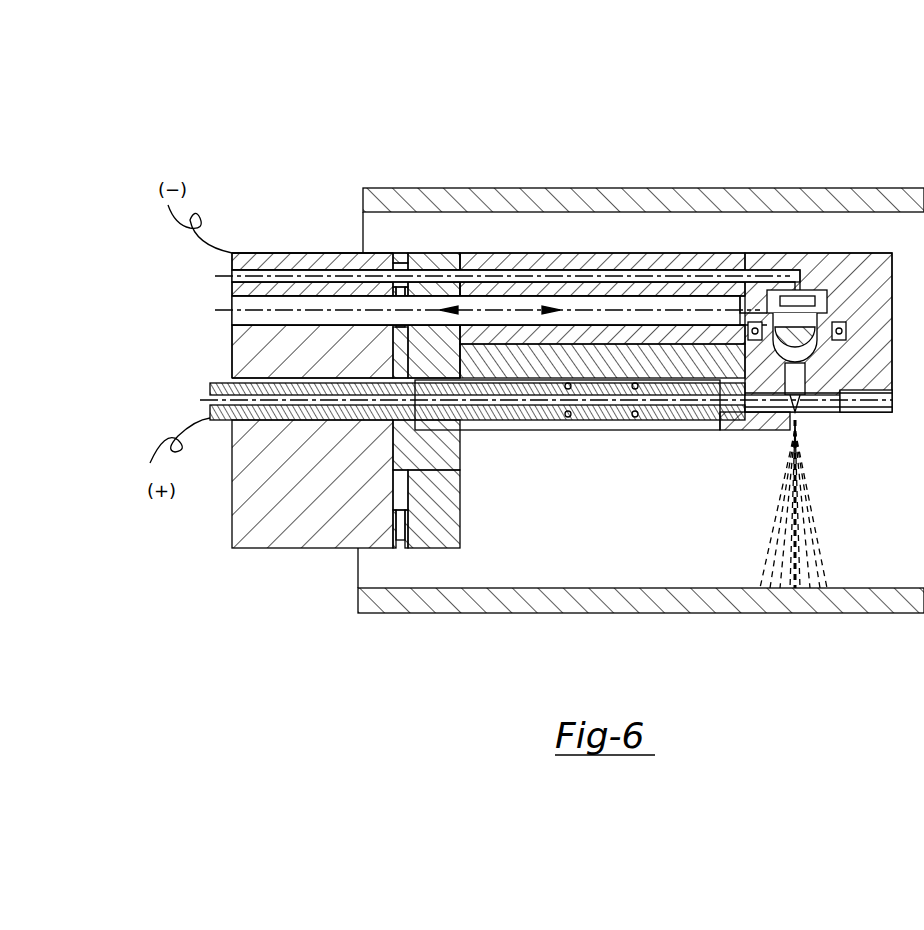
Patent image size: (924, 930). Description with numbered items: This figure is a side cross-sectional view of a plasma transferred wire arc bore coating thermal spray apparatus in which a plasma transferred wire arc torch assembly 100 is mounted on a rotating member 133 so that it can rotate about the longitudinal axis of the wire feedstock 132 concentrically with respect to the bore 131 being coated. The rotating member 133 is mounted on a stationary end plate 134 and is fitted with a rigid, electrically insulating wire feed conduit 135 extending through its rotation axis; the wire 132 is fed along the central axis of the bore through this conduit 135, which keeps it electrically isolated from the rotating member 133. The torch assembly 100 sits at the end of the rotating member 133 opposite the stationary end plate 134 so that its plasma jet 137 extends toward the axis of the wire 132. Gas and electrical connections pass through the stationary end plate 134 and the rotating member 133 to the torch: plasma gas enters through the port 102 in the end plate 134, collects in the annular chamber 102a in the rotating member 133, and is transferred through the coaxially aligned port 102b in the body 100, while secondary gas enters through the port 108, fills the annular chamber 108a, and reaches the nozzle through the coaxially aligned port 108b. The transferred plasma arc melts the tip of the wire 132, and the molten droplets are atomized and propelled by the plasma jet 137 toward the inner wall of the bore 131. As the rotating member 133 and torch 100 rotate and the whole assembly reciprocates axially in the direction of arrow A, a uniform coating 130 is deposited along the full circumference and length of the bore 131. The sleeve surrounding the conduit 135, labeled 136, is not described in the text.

The plasma transferred wire arc torch assembly 100 is at (719, 245).
The port 102 is at (265, 266).
The annular chamber 102a is at (398, 262).
The port 102b is at (495, 268).
The port 108 is at (231, 313).
The annular chamber 108a is at (352, 305).
The port 108b is at (605, 300).
The coating 130 is at (537, 200).
The bore 131 is at (807, 180).
The wire feedstock 132 is at (783, 414).
The rotating member 133 is at (444, 252).
The stationary end plate 134 is at (307, 252).
The wire feed conduit 135 is at (225, 420).
The electrode sleeve 136 is at (568, 418).
The plasma jet 137 is at (807, 420).